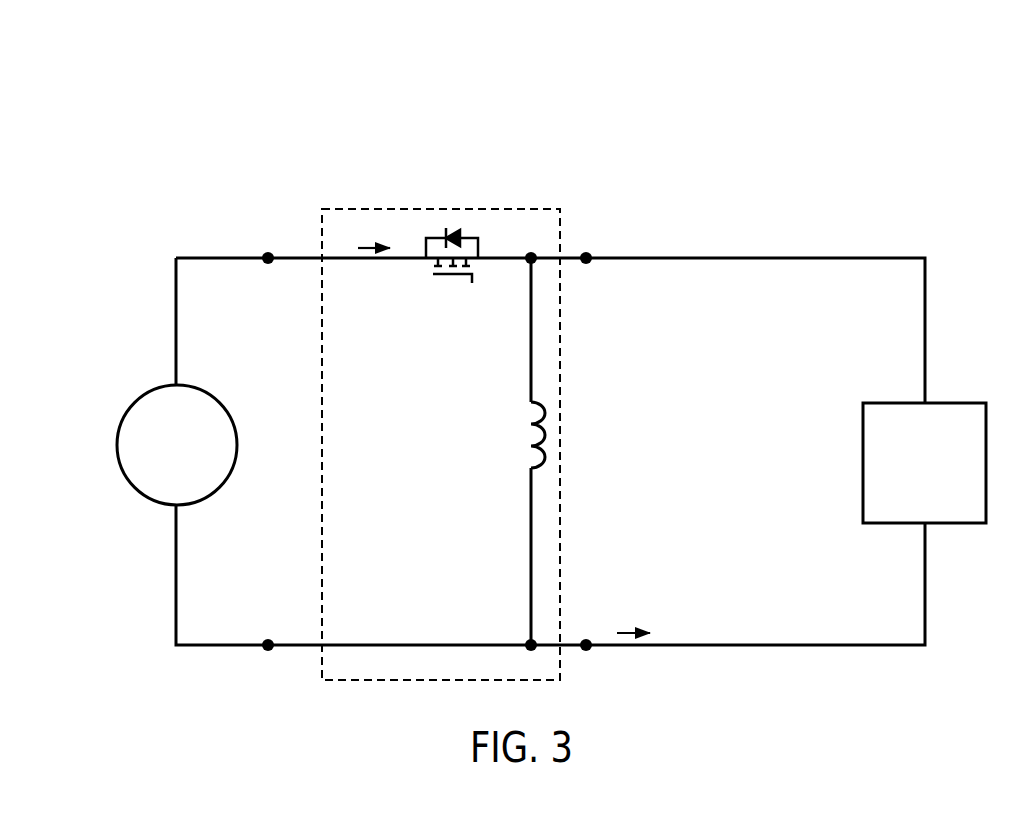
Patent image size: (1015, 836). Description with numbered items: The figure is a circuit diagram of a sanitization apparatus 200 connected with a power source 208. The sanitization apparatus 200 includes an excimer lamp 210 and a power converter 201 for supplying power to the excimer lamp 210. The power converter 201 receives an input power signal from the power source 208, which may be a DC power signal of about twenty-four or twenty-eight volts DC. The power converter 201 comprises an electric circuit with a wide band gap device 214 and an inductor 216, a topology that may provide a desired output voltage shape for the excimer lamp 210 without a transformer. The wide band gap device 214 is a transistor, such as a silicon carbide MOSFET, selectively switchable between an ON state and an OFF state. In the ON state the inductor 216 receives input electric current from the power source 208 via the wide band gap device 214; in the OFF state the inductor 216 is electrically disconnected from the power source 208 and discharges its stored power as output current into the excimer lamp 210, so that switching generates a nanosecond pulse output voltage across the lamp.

The sanitization apparatus 200 is at (276, 98).
The power converter 201 is at (374, 196).
The power source 208 is at (138, 397).
The excimer lamp 210 is at (967, 402).
The wide band gap (WBG) device 214 is at (449, 214).
The inductor 216 is at (517, 406).